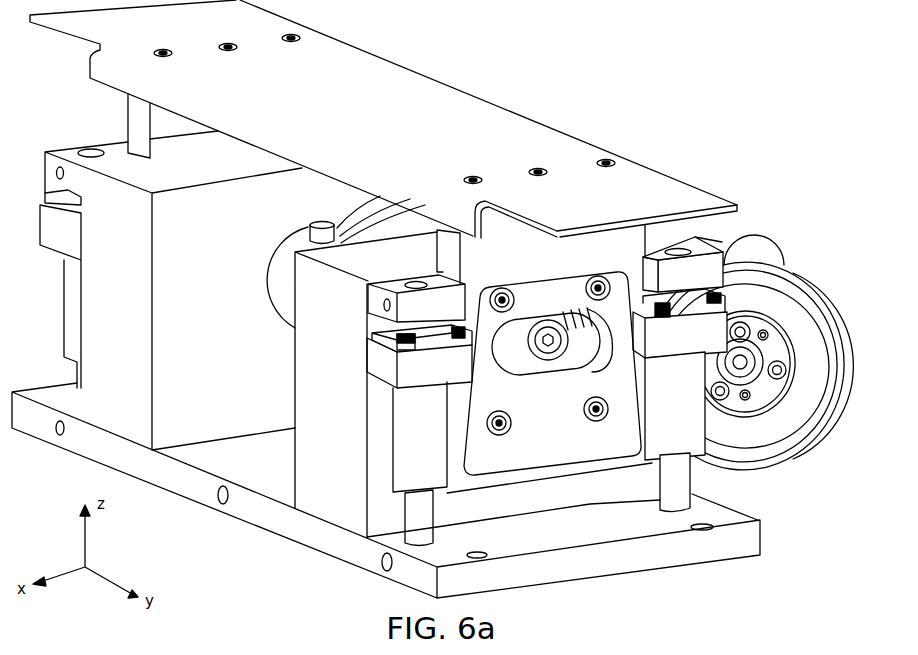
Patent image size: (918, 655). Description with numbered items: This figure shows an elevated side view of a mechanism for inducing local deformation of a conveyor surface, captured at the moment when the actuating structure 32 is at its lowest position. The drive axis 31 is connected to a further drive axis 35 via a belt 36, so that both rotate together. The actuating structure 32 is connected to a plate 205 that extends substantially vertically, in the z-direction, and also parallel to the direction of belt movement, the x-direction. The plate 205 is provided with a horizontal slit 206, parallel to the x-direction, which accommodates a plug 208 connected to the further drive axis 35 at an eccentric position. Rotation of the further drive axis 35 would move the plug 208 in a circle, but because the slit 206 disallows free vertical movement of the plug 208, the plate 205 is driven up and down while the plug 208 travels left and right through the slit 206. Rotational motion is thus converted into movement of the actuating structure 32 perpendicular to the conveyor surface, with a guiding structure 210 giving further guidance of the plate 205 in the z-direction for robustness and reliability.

The actuating structure 32 is at (430, 98).
The plate 205 is at (498, 243).
The further drive axis 35 is at (597, 283).
The belt 36 is at (736, 251).
The drive axis 31 is at (793, 286).
The slit 206 is at (598, 347).
The plug 208 is at (513, 358).
The guiding structure 210 is at (387, 362).